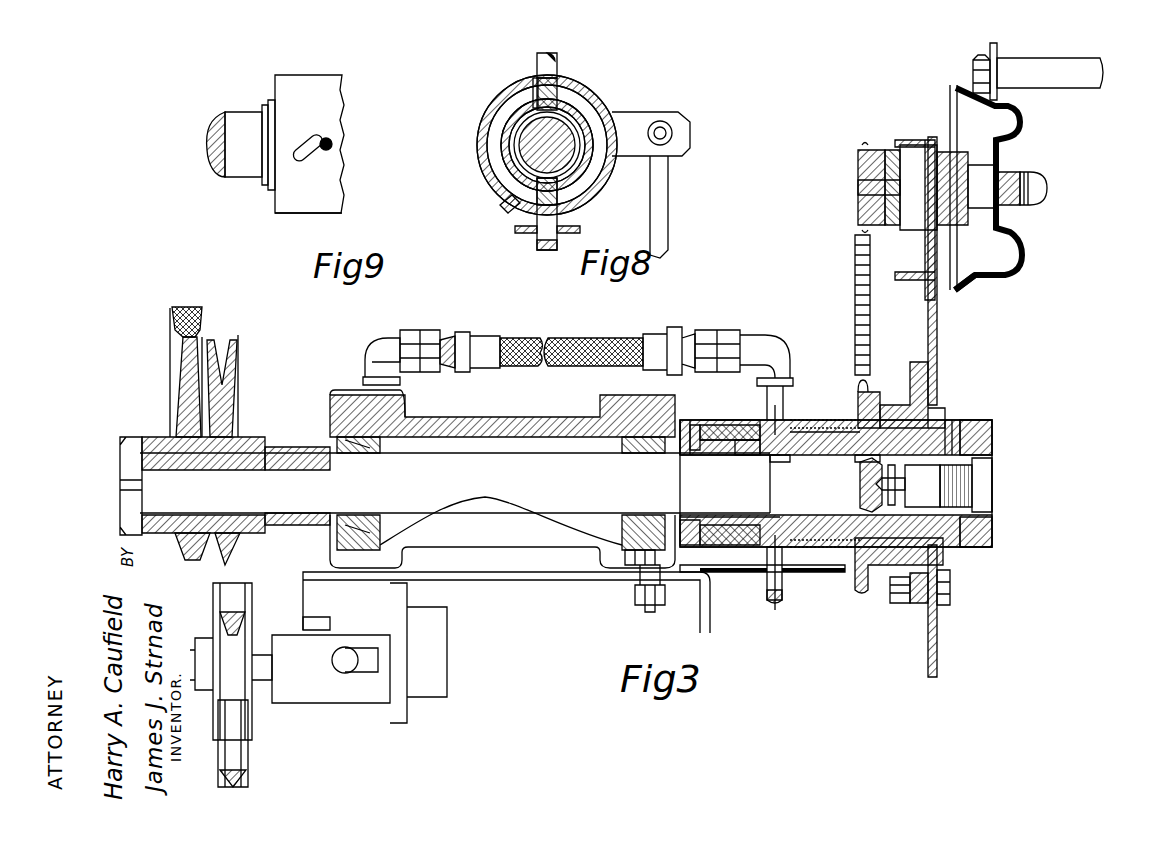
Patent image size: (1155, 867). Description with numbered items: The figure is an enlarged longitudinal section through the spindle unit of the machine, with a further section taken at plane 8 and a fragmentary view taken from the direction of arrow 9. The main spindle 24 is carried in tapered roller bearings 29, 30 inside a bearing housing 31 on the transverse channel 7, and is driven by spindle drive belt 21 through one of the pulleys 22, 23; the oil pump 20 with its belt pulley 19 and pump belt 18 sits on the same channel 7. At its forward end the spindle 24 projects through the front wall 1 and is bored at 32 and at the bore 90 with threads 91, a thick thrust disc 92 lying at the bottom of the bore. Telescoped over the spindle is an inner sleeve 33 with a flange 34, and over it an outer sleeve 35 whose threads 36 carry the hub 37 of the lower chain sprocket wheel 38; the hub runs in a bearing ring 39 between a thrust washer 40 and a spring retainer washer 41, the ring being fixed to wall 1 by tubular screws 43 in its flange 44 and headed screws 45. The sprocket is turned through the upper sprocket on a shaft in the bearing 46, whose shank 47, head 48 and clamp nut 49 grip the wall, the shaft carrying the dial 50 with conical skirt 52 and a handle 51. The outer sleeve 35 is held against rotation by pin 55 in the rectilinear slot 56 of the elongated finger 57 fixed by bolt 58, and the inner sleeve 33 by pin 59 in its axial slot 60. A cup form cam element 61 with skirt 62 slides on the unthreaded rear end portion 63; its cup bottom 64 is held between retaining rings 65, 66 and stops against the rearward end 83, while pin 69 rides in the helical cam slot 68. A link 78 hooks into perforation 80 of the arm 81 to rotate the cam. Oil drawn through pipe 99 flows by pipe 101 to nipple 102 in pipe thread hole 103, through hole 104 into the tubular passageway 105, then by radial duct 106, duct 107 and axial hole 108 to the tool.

In FIG. 3, the front wall 1 is at (938, 352).
In FIG. 3, the transverse channel 7 is at (530, 580).
In FIG. 3, the top cover 8 is at (778, 405).
In FIG. 8, the electric motor 9 is at (499, 229).
In FIG. 3, the pump belt 18 is at (238, 752).
In FIG. 3, the belt pulley 19 is at (213, 628).
In FIG. 3, the oil pump 20 is at (440, 636).
In FIG. 3, the spindle drive belt 21 is at (195, 306).
In FIG. 3, the pulley 22 is at (238, 368).
In FIG. 3, the pulley 23 is at (170, 366).
In FIG. 8, the main spindle 24 is at (530, 145).
In FIG. 3, the main spindle 24 is at (455, 483).
In FIG. 3, the tapered roller bearing 29 is at (365, 452).
In FIG. 3, the tapered roller bearing 30 is at (640, 452).
In FIG. 3, the bearing housing 31 is at (502, 479).
In FIG. 3, the axial bore 32 is at (1000, 485).
In FIG. 8, the inner sleeve 33 is at (510, 124).
In FIG. 3, the inner sleeve 33 is at (812, 455).
In FIG. 3, the flange 34 is at (986, 437).
In FIG. 8, the outer sleeve 35 is at (500, 160).
In FIG. 3, the outer sleeve 35 is at (820, 447).
In FIG. 3, the threads 36 is at (825, 442).
In FIG. 3, the hub 37 is at (858, 428).
In FIG. 3, the lower chain sprocket wheel 38 is at (858, 396).
In FIG. 3, the bearing ring 39 is at (903, 408).
In FIG. 3, the thrust washer 40 is at (872, 404).
In FIG. 3, the spring retainer washer 41 is at (942, 412).
In FIG. 3, the tubular screw 43 is at (855, 291).
In FIG. 3, the flange 44 is at (858, 162).
In FIG. 3, the headed screw 45 is at (858, 192).
In FIG. 3, the bearing 46 is at (958, 152).
In FIG. 3, the shank 47 is at (892, 226).
In FIG. 3, the head 48 is at (968, 225).
In FIG. 3, the clamp nut 49 is at (912, 230).
In FIG. 3, the dial 50 is at (1022, 250).
In FIG. 3, the handle 51 is at (1060, 78).
In FIG. 3, the conical skirt 52 is at (960, 293).
In FIG. 8, the pin 55 is at (545, 248).
In FIG. 3, the pin 55 is at (783, 592).
In FIG. 8, the rectilinear slot 56 is at (537, 240).
In FIG. 3, the rectilinear slot 56 is at (812, 567).
In FIG. 8, the elongated finger 57 is at (575, 228).
In FIG. 3, the elongated finger 57 is at (742, 571).
In FIG. 3, the bolt 58 is at (652, 610).
In FIG. 3, the pin 59 is at (963, 432).
In FIG. 3, the axial slot 60 is at (950, 438).
In FIG. 9, the cup form cam element 61 is at (307, 84).
In FIG. 8, the cup form cam element 61 is at (578, 90).
In FIG. 3, the cup form cam element 61 is at (718, 420).
In FIG. 9, the skirt 62 is at (315, 210).
In FIG. 8, the skirt 62 is at (598, 95).
In FIG. 3, the skirt 62 is at (733, 420).
In FIG. 8, the rear end portion 63 is at (490, 110).
In FIG. 3, the rear end portion 63 is at (730, 546).
In FIG. 3, the cup bottom 64 is at (688, 548).
In FIG. 3, the retaining ring 65 is at (684, 424).
In FIG. 3, the retaining ring 66 is at (700, 428).
In FIG. 9, the cam slot 68 is at (309, 160).
In FIG. 9, the pin 69 is at (333, 143).
In FIG. 8, the pin 69 is at (498, 204).
In FIG. 8, the link 78 is at (668, 184).
In FIG. 8, the perforation 80 is at (675, 132).
In FIG. 8, the arm 81 is at (640, 118).
In FIG. 3, the rearward end 83 is at (696, 486).
In FIG. 3, the bore 90 is at (985, 500).
In FIG. 3, the threads 91 is at (995, 470).
In FIG. 3, the thrust disc 92 is at (866, 496).
In FIG. 3, the pipe 99 is at (360, 668).
In FIG. 3, the pipe 101 is at (362, 381).
In FIG. 8, the nipple 102 is at (557, 66).
In FIG. 3, the nipple 102 is at (790, 384).
In FIG. 8, the pipe thread hole 103 is at (535, 85).
In FIG. 3, the pipe thread hole 103 is at (745, 428).
In FIG. 8, the hole 104 is at (530, 85).
In FIG. 3, the hole 104 is at (757, 452).
In FIG. 3, the tubular passageway 105 is at (784, 465).
In FIG. 3, the radial duct 106 is at (868, 458).
In FIG. 3, the duct 107 is at (922, 486).
In FIG. 3, the axial hole 108 is at (907, 485).